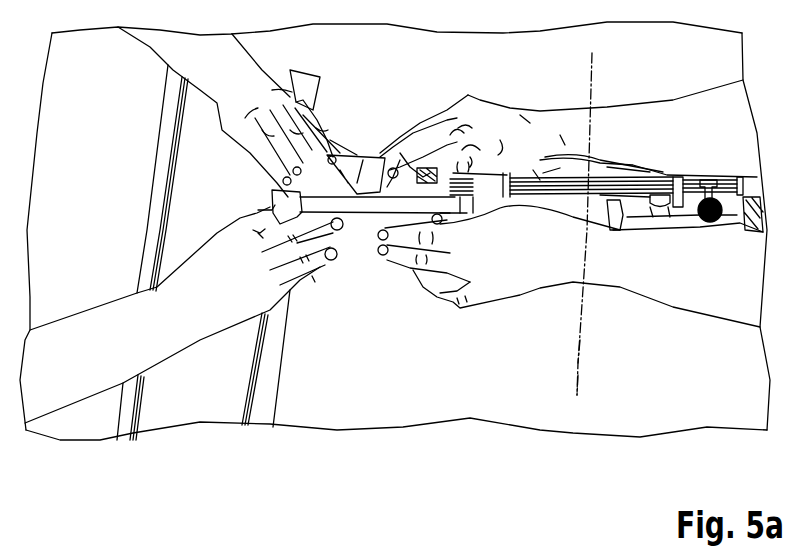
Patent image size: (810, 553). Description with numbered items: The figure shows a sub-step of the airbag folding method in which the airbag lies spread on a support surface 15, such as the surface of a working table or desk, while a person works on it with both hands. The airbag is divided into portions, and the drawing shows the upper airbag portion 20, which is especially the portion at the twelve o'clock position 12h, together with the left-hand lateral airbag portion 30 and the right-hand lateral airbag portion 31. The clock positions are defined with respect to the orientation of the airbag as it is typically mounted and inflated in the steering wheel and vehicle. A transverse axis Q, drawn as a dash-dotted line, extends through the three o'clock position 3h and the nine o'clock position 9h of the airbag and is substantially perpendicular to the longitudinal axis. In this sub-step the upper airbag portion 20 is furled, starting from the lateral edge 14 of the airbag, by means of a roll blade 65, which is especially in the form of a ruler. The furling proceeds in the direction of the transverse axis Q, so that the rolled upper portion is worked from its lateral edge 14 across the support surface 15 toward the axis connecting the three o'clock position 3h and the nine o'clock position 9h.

The 12 o'clock position 12h is at (147, 252).
The lateral edge 14 is at (272, 203).
The upper airbag portion 20 is at (357, 157).
The right-hand lateral airbag portion 31 is at (572, 173).
The 3 o'clock position 3h is at (592, 214).
The 9 o'clock position 9h is at (578, 395).
The left-hand lateral airbag portion 30 is at (603, 200).
The roll blade 65 is at (273, 382).
The transverse axis Q is at (580, 363).
The support surface 15 is at (739, 402).